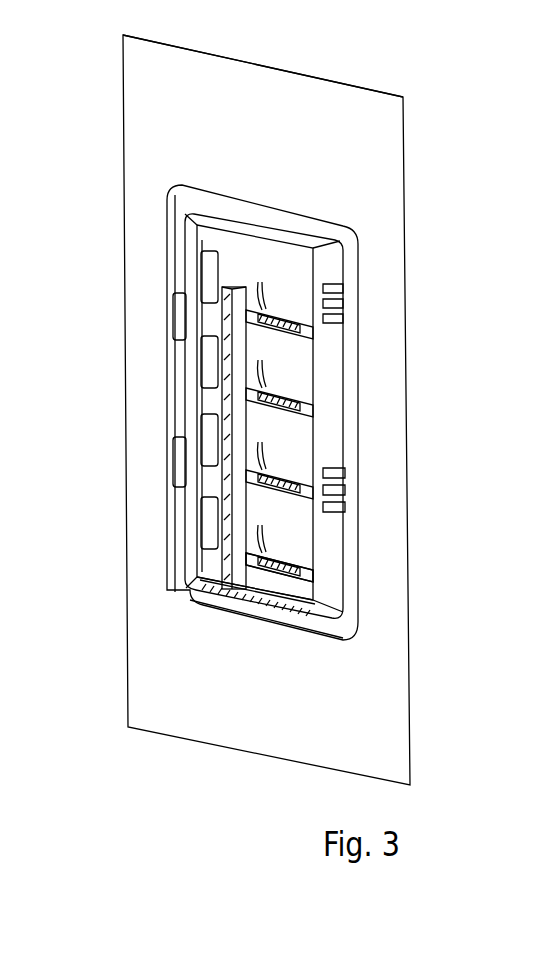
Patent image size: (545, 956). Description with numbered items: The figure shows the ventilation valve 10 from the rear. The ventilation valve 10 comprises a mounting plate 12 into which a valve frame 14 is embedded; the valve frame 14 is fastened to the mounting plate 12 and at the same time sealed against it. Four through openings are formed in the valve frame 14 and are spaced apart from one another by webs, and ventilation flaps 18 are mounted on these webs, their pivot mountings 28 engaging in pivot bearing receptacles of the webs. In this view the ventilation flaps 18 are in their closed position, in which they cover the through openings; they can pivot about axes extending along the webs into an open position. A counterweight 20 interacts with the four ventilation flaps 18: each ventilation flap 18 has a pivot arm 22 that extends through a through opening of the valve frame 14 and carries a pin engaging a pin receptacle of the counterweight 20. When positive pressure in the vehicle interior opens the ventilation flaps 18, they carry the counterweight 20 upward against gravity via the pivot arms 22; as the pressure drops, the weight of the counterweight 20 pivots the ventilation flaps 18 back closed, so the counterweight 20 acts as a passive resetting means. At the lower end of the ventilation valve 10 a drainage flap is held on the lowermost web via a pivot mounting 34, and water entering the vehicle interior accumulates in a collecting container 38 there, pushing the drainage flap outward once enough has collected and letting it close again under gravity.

The ventilation valve 10 is at (385, 137).
The mounting plate 12 is at (264, 168).
The valve frame 14 is at (337, 272).
The ventilation flaps 18 is at (210, 523).
The counterweight 20 is at (230, 546).
The pivot arm 22 is at (243, 315).
The pivot mountings 28 is at (317, 562).
The pivot mounting 34 is at (320, 581).
The collecting container 38 is at (320, 607).